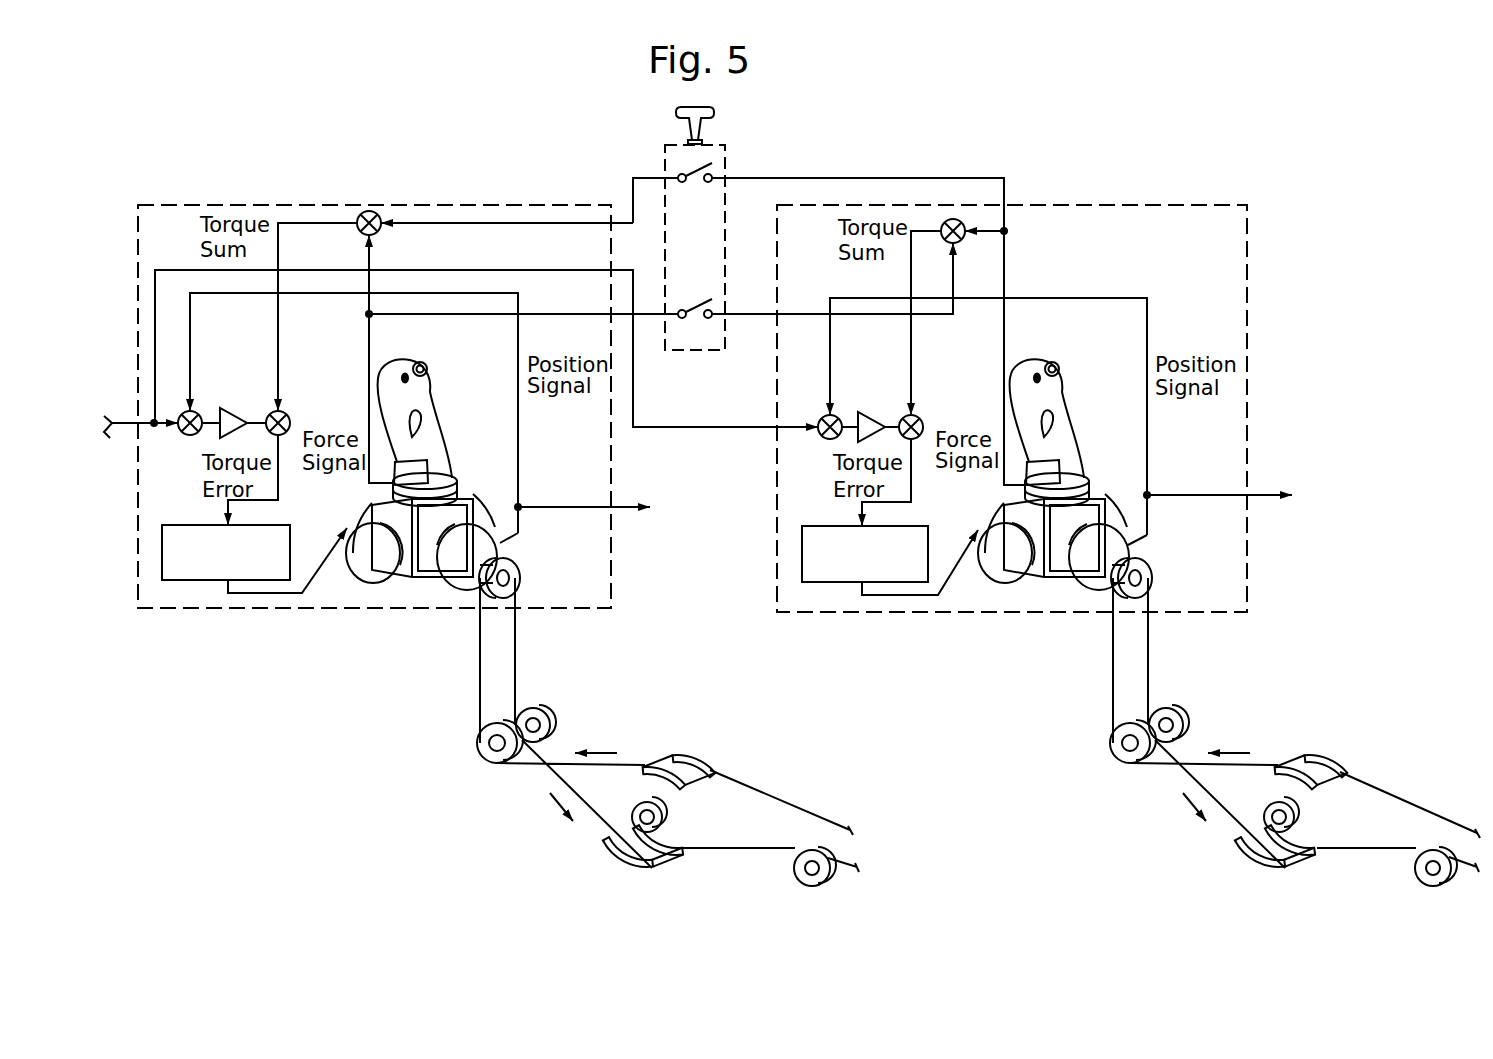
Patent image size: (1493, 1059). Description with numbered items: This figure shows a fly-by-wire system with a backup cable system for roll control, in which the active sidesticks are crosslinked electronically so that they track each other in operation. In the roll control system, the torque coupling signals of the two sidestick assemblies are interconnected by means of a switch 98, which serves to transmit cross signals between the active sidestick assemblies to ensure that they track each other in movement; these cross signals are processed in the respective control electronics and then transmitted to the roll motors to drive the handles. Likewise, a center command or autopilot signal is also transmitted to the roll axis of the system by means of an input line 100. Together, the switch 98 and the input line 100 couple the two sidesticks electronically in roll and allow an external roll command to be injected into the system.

The switch 98 is at (720, 145).
The input line 100 is at (135, 440).